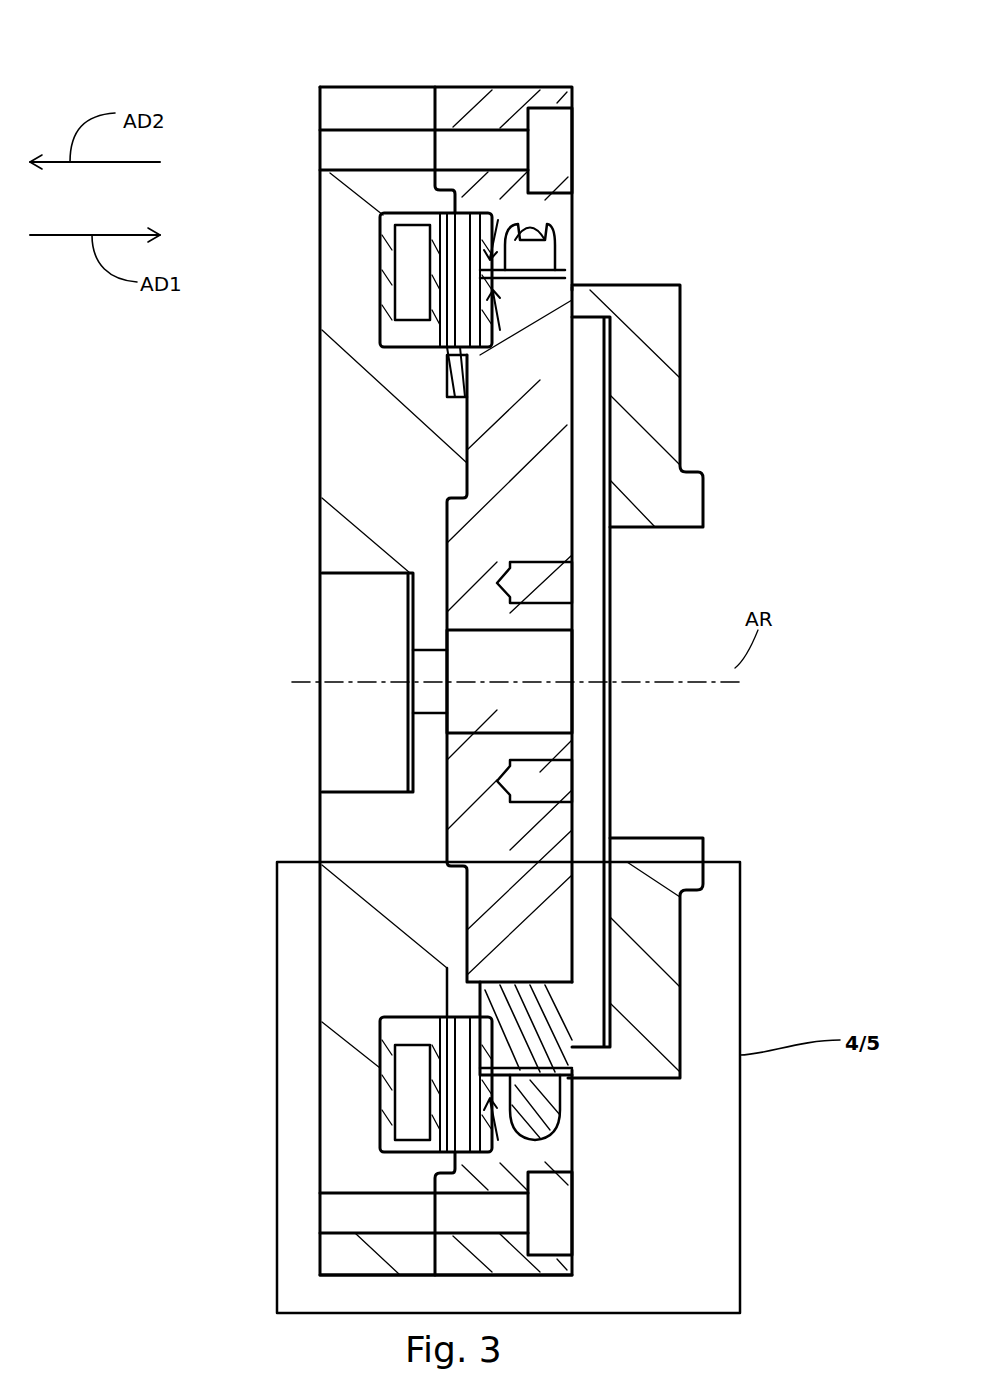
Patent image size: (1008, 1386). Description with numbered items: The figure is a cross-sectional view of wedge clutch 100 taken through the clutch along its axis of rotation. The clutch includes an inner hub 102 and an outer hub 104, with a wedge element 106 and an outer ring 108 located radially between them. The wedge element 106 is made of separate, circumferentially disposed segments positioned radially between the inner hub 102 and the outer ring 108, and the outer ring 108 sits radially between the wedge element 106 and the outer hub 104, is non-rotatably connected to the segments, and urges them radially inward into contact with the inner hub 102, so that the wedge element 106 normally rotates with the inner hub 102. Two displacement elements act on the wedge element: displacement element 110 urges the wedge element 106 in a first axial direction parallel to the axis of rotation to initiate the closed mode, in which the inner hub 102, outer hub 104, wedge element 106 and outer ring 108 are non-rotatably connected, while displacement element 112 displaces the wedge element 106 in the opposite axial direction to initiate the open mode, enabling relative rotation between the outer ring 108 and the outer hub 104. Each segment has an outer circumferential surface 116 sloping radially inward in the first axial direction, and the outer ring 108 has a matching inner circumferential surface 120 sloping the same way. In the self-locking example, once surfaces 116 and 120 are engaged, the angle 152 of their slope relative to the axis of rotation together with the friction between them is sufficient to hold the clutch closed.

The wedge clutch 100 is at (747, 113).
The inner hub 102 is at (555, 525).
The outer hub 104 is at (513, 88).
The wedge element 106 is at (530, 985).
The outer ring 108 is at (530, 260).
The displacement element 110 is at (450, 330).
The displacement element 112 is at (690, 400).
The outer circumferential surface 116 is at (548, 1075).
The inner circumferential surface 120 is at (575, 1057).
The angle 152 is at (490, 337).